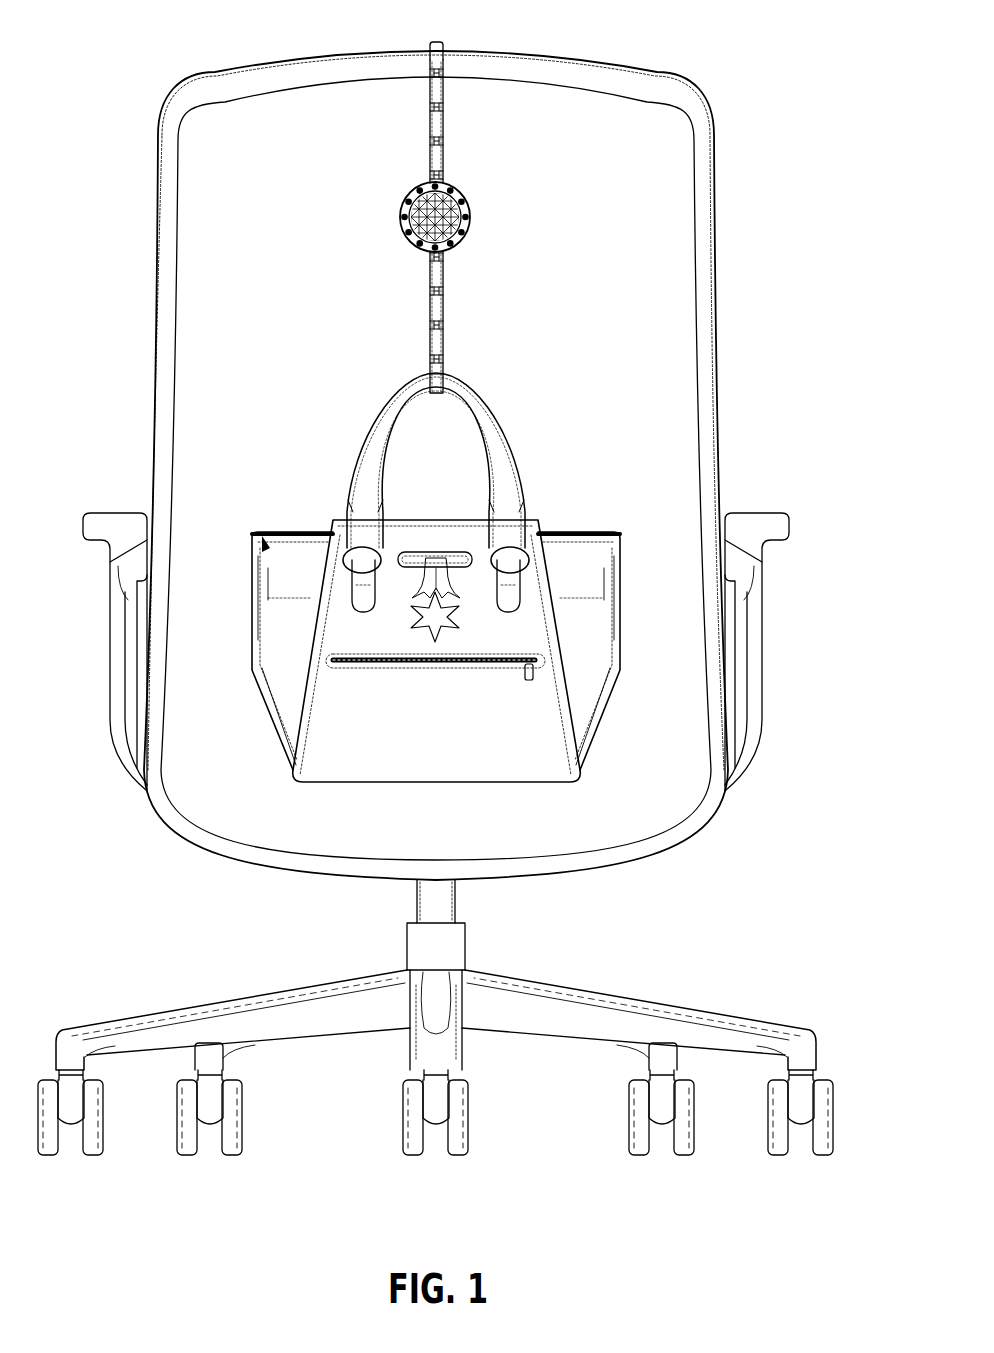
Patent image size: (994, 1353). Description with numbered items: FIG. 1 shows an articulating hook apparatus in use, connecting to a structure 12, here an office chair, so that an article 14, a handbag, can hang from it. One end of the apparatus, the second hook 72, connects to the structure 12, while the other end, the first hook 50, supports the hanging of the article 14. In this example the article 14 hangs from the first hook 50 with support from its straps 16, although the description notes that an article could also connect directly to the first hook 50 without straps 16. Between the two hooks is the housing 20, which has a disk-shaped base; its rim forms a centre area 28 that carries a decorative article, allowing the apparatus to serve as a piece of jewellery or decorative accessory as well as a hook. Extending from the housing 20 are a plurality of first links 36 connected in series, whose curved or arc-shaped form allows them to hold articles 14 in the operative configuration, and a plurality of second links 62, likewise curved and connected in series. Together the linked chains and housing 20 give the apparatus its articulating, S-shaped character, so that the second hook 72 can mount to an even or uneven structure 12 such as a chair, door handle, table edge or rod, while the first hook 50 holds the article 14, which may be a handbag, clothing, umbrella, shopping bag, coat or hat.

The structure 12 is at (645, 258).
The first hook 50 is at (445, 381).
The article 14 is at (540, 710).
The straps 16 is at (497, 440).
The housing 20 is at (478, 219).
The centre area 28 is at (400, 217).
The first links 36 is at (430, 275).
The second links 62 is at (428, 128).
The second hook 72 is at (436, 52).